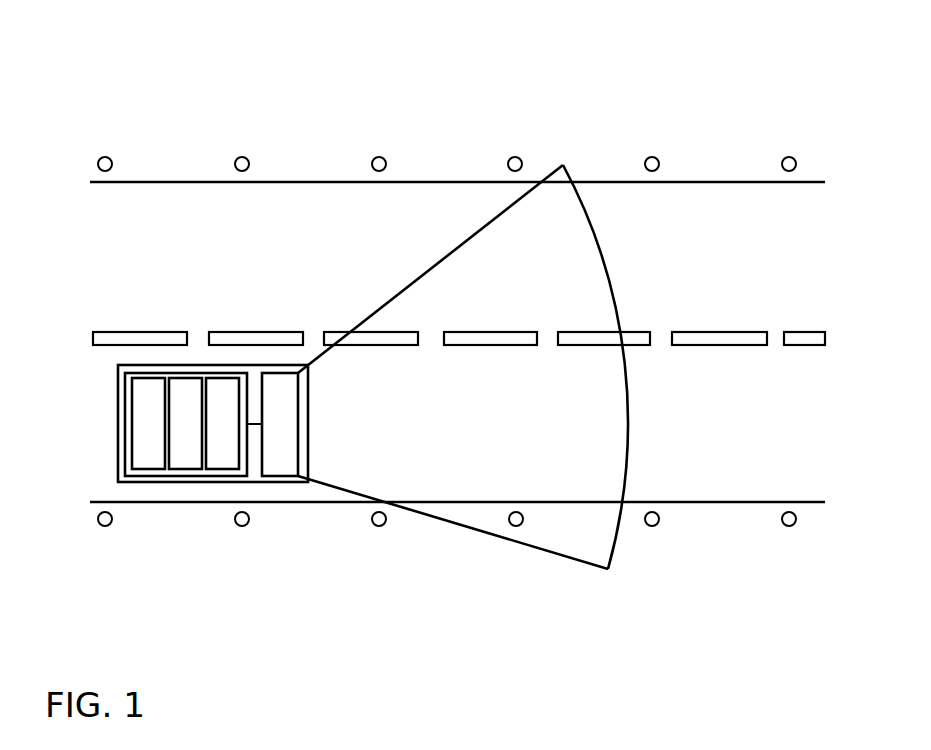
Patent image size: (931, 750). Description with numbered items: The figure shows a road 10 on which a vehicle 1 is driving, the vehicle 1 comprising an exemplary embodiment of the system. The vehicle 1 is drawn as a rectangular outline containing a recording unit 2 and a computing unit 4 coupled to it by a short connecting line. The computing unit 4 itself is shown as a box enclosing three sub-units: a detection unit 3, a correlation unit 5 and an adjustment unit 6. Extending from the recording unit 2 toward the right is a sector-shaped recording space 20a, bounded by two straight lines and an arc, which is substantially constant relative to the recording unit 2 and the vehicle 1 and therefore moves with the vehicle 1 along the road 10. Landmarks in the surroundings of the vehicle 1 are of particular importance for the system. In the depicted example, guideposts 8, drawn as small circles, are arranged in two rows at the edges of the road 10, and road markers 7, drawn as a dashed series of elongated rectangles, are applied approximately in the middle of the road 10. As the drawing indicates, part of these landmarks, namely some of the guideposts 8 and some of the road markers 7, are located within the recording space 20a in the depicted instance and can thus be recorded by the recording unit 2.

The vehicle 1 is at (136, 480).
The recording unit 2 is at (288, 436).
The detection unit 3 is at (156, 436).
The computing unit 4 is at (186, 475).
The correlation unit 5 is at (193, 436).
The adjustment unit 6 is at (230, 436).
The road markers 7 is at (182, 329).
The guideposts 8 is at (778, 159).
The road 10 is at (737, 458).
The recording space 20a is at (490, 223).